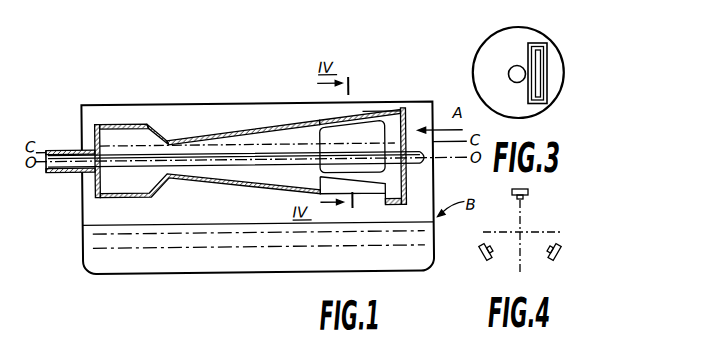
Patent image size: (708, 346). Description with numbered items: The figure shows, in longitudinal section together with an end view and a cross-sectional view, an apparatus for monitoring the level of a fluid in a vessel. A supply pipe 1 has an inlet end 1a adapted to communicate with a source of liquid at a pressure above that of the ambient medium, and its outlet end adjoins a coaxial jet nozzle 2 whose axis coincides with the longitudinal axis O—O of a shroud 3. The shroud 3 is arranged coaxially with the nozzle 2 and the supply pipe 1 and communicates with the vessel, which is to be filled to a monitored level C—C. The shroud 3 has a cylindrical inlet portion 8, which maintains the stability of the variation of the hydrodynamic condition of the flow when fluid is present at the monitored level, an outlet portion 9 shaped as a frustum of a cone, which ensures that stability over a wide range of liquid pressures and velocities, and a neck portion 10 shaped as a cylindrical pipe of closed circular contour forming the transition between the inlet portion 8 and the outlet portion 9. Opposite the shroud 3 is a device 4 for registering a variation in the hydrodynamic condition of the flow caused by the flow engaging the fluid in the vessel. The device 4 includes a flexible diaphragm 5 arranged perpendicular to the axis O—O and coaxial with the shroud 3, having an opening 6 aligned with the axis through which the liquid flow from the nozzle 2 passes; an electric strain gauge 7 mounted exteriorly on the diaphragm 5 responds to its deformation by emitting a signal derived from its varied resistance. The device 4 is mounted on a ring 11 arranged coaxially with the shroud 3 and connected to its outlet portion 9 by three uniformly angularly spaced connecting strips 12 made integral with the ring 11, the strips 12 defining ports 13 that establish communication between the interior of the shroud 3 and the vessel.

In FIG. 1, the supply pipe 1 is at (62, 148).
In FIG. 1, the inlet end 1a is at (44, 147).
In FIG. 1, the jet nozzle 2 is at (96, 148).
In FIG. 1, the shroud 3 is at (128, 118).
In FIG. 1, the device for registering a variation in the hydrodynamic condition 4 is at (415, 112).
In FIG. 3, the device for registering a variation in the hydrodynamic condition 4 is at (475, 42).
In FIG. 1, the flexible diaphragm 5 is at (406, 202).
In FIG. 3, the flexible diaphragm 5 is at (480, 80).
In FIG. 1, the opening 6 is at (405, 168).
In FIG. 3, the opening 6 is at (512, 68).
In FIG. 3, the electric strain gauge 7 is at (547, 100).
In FIG. 1, the inlet portion 8 is at (149, 131).
In FIG. 1, the outlet portion 9 is at (218, 147).
In FIG. 1, the neck portion 10 is at (180, 181).
In FIG. 1, the ring 11 is at (392, 104).
In FIG. 1, the connecting strips 12 is at (356, 112).
In FIG. 4, the connecting strips 12 is at (479, 262).
In FIG. 1, the ports 13 is at (312, 123).